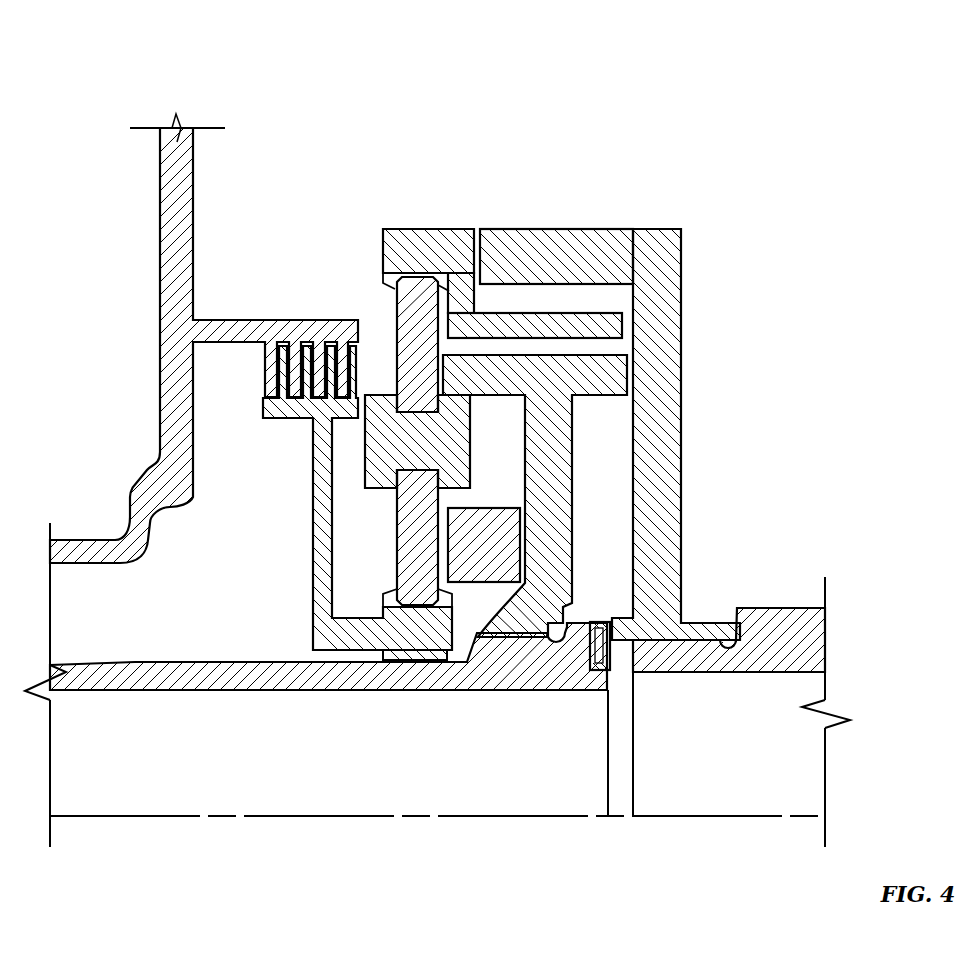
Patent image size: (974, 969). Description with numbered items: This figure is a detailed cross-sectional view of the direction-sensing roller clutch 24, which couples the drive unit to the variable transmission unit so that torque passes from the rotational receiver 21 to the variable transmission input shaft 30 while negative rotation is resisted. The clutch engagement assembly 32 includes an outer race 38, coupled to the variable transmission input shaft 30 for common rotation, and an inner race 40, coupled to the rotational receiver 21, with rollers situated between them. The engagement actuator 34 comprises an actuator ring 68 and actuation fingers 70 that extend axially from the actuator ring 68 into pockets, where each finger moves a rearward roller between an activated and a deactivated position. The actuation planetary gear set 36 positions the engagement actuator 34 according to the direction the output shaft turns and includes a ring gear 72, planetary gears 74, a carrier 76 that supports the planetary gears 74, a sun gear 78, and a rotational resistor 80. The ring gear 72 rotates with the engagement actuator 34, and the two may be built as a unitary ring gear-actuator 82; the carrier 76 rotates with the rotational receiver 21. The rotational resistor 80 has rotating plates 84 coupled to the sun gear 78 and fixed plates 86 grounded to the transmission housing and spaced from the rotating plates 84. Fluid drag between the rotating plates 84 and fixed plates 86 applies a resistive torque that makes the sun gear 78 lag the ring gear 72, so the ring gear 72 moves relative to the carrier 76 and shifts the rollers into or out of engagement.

The rotational receiver 21 is at (168, 662).
The direction-sensing roller clutch 24 is at (278, 140).
The variable transmission input shaft 30 is at (788, 607).
The clutch engagement assembly 32 is at (680, 217).
The engagement actuator 34 is at (527, 108).
The actuation planetary gear set 36 is at (420, 178).
The outer race 38 is at (628, 228).
The inner race 40 is at (598, 402).
The actuator ring 68 is at (475, 297).
The actuation fingers 70 is at (530, 313).
The ring gear 72 is at (420, 229).
The planetary gears 74 is at (397, 368).
The carrier 76 is at (360, 617).
The sun gear 78 is at (375, 395).
The rotational resistor 80 is at (302, 310).
The unitary ring gear-actuator 82 is at (462, 212).
The rotating plates 84 is at (290, 420).
The fixed plates 86 is at (237, 343).